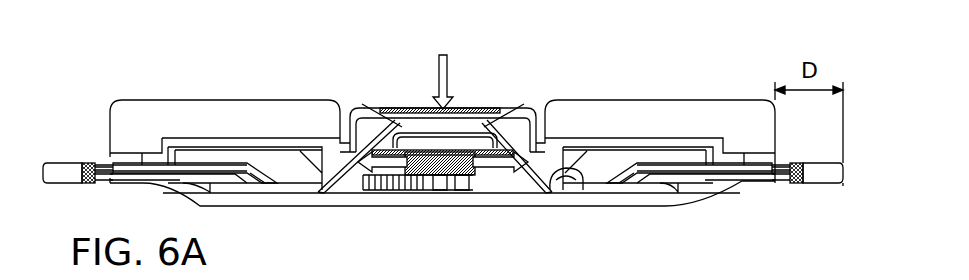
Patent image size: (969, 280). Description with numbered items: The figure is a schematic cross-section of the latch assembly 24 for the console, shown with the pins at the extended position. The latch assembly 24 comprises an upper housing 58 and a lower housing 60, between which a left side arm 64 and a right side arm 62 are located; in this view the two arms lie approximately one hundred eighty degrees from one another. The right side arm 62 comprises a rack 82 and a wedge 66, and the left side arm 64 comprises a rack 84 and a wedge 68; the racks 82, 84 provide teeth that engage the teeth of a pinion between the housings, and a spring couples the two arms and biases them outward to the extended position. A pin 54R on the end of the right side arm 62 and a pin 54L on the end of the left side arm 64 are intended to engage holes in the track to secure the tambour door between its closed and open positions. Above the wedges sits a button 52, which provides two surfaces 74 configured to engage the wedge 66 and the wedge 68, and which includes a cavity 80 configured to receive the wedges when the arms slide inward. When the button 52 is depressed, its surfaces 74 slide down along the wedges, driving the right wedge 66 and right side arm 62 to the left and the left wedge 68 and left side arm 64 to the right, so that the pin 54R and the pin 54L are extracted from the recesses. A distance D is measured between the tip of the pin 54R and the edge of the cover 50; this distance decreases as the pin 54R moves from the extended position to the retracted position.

The latch assembly 24 is at (692, 76).
The cover 50 is at (155, 112).
The button 52 is at (493, 117).
The pin 54L is at (68, 166).
The pin 54R is at (818, 178).
The upper housing 58 is at (251, 143).
The lower housing 60 is at (577, 200).
The arm 62 is at (633, 190).
The arm 64 is at (265, 188).
The wedge 66 is at (538, 182).
The wedge 68 is at (340, 182).
The surface 74 is at (362, 105).
The cavity 80 is at (378, 122).
The rack 82 is at (463, 182).
The rack 84 is at (392, 188).